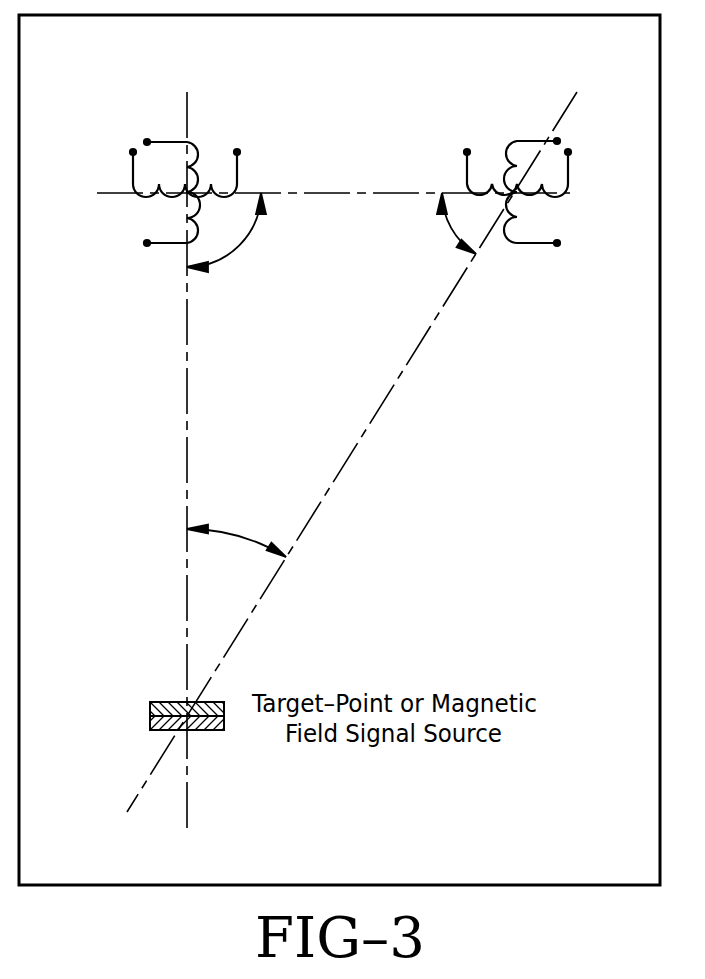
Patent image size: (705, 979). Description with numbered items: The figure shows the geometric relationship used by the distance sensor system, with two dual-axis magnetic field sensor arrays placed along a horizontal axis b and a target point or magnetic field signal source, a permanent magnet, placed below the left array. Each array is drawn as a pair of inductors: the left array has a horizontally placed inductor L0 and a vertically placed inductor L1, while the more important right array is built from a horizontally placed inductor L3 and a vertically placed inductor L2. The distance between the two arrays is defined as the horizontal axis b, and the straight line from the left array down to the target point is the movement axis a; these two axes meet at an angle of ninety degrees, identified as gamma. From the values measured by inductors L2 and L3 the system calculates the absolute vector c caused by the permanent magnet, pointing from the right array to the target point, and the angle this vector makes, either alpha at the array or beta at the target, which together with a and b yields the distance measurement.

The first horizontal coil L0 is at (175, 94).
The first vertical coil L1 is at (73, 205).
The vertically placed inductor L2 is at (613, 207).
The horizontally placed inductor L3 is at (545, 94).
The movement axis a is at (169, 460).
The horizontal axis b is at (333, 169).
The absolute vector value c is at (352, 452).